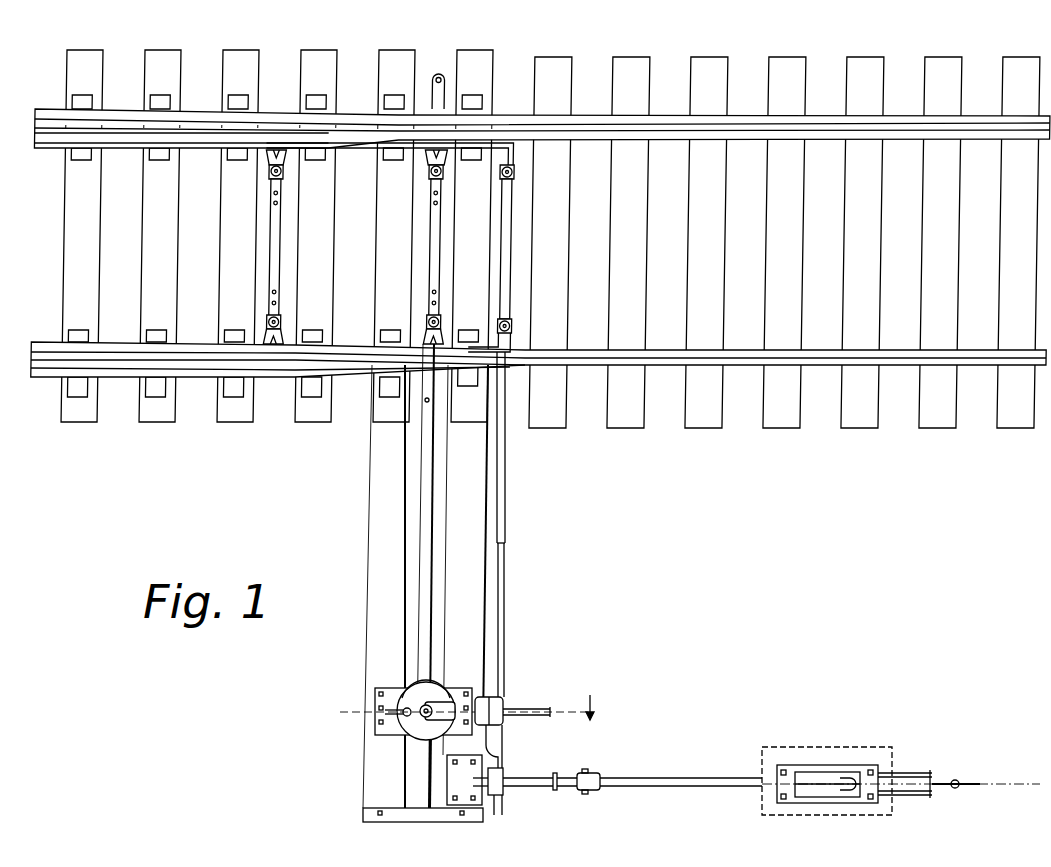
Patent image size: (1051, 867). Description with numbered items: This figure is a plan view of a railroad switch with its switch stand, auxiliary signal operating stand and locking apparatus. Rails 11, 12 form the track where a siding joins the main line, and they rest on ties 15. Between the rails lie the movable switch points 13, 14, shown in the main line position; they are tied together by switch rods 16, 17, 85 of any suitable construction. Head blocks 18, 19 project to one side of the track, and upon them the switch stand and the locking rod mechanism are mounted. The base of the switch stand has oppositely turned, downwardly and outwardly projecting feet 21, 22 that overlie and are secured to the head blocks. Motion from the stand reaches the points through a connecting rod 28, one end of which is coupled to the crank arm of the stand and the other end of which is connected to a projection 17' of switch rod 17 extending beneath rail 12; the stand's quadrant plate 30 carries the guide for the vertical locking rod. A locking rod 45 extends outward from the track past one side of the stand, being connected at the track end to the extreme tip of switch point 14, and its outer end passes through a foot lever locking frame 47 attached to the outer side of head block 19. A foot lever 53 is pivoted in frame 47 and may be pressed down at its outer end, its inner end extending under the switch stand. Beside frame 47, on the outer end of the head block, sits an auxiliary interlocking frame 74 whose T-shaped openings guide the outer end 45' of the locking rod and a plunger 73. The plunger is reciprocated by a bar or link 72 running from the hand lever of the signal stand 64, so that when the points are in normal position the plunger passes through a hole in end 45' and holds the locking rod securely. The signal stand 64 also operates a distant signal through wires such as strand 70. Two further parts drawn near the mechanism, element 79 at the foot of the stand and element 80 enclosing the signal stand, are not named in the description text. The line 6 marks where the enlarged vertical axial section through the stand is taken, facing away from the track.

The section line 6 is at (599, 710).
The rail 11 is at (590, 130).
The rail 12 is at (587, 366).
The switch point 13 is at (210, 150).
The switch point 14 is at (193, 343).
The ties 15 is at (155, 240).
The switch rod 16 is at (270, 246).
The switch rod 17 is at (414, 209).
The projection of switch rod 17' is at (383, 418).
The head block 18 is at (384, 586).
The head block 19 is at (465, 560).
The foot of switch stand base 21 is at (385, 688).
The foot of switch stand base 22 is at (462, 690).
The connecting rod 28 is at (426, 571).
The quadrant plate 30 is at (426, 710).
The locking rod 45 is at (514, 560).
The outer end of locking rod 45' is at (519, 810).
The foot lever locking frame 47 is at (504, 705).
The foot lever 53 is at (546, 709).
The signal stand 64 is at (805, 768).
The wire or strand 70 is at (1003, 785).
The bar or link 72 is at (665, 782).
The plunger 73 is at (572, 791).
The auxiliary interlocking frame 74 is at (505, 772).
The base plate 79 is at (424, 812).
The housing 80 is at (880, 757).
The switch rod 85 is at (508, 262).